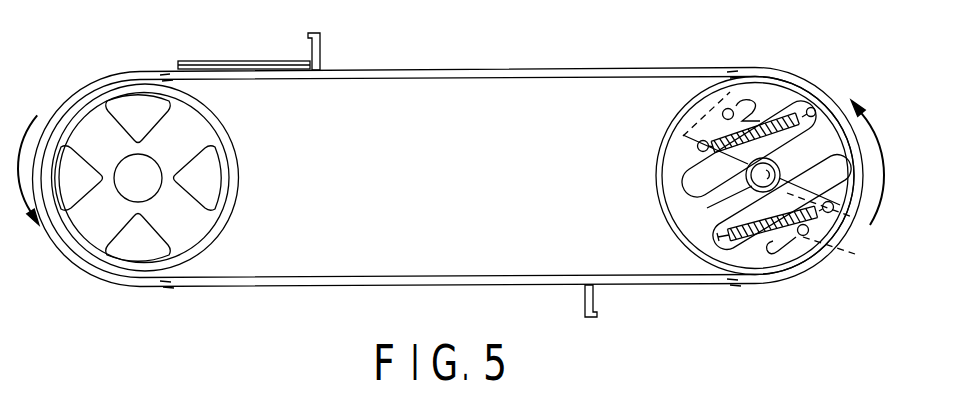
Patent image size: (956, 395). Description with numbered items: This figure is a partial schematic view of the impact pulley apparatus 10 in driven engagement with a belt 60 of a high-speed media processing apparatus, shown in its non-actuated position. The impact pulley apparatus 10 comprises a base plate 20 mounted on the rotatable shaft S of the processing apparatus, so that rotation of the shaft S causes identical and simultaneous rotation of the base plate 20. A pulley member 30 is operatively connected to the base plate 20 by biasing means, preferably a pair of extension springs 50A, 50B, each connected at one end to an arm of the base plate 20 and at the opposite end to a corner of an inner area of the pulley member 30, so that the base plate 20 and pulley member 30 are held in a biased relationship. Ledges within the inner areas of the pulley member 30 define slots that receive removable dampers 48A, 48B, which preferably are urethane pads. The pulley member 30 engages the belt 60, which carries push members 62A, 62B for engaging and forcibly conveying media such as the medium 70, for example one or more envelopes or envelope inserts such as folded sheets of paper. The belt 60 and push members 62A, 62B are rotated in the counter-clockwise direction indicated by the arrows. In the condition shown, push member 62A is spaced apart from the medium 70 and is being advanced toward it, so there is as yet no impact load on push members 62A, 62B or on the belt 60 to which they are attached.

The impact pulley apparatus 10 is at (596, 118).
The base plate 20 is at (747, 175).
The pulley member 30 is at (841, 149).
The removable damper 48A is at (748, 101).
The removable damper 48B is at (790, 252).
The extension spring 50A is at (788, 112).
The extension spring 50B is at (757, 250).
The belt 60 is at (523, 68).
The push member 62A is at (320, 43).
The push member 62B is at (597, 313).
The medium 70 is at (218, 61).
The rotatable shaft S is at (696, 210).